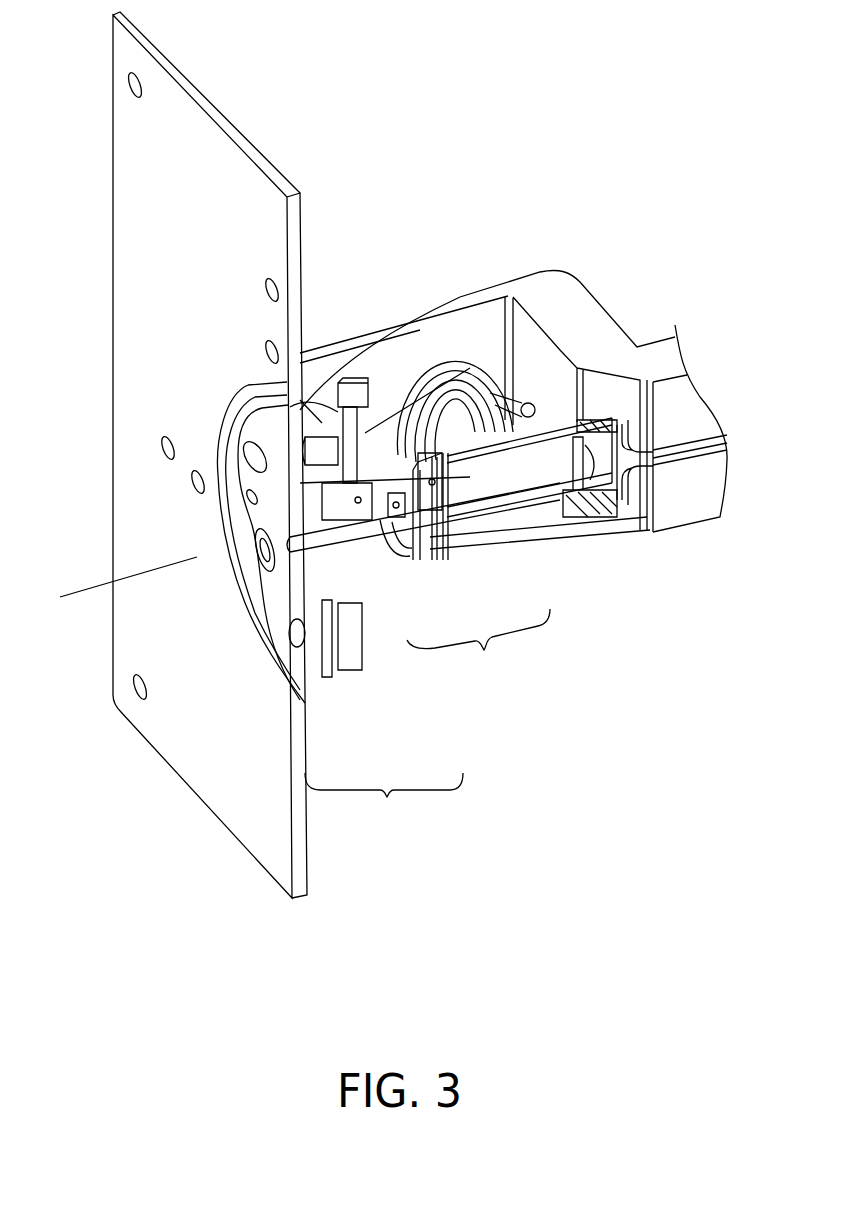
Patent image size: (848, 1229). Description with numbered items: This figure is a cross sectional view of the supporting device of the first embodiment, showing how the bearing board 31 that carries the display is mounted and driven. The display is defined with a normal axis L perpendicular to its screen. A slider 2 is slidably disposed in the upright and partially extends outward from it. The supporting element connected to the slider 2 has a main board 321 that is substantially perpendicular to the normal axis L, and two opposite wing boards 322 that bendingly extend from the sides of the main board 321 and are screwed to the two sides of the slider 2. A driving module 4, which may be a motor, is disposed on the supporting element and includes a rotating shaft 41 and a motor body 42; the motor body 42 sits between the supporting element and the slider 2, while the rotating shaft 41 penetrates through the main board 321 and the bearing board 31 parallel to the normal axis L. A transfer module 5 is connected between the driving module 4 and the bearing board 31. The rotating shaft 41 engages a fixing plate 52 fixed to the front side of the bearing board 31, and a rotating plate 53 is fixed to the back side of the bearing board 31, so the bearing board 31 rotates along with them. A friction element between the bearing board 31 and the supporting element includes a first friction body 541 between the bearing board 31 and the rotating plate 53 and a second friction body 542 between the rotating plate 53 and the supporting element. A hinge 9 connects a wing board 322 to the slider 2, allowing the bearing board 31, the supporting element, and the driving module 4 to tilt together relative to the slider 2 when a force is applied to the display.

The slider 2 is at (585, 307).
The bearing board 31 is at (202, 127).
The main board 321 is at (350, 372).
The wing boards 322 is at (393, 357).
The hinge 9 is at (466, 385).
The driving module 4 is at (478, 646).
The rotating shaft 41 is at (368, 537).
The motor body 42 is at (517, 540).
The transfer module 5 is at (384, 803).
The fixing plate 52 is at (305, 645).
The rotating plate 53 is at (332, 657).
The first friction body 541 is at (328, 688).
The second friction body 542 is at (350, 653).
The normal axis L is at (113, 586).